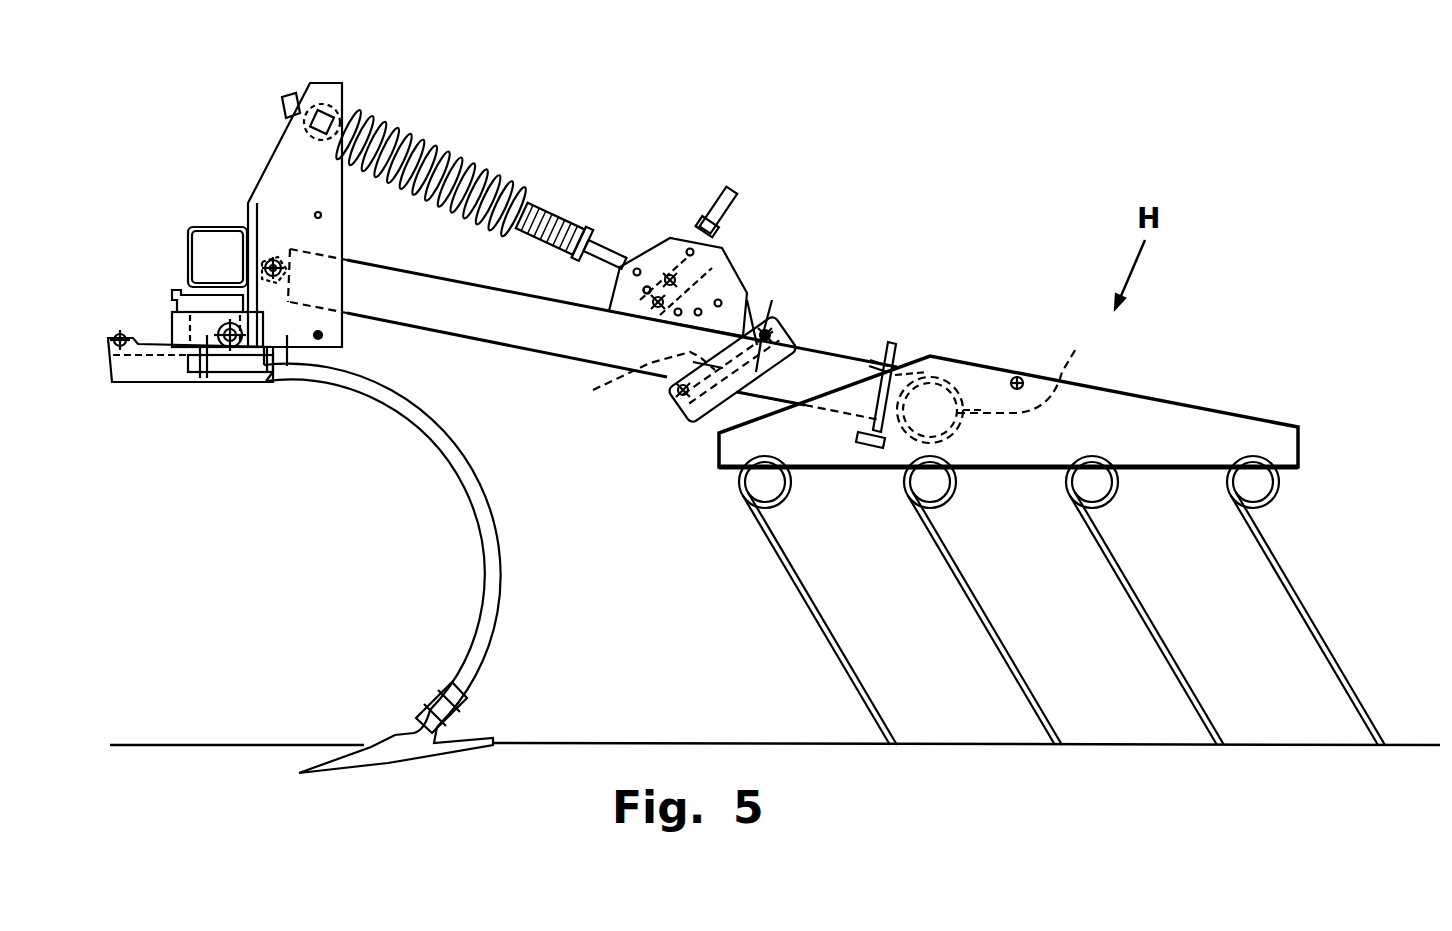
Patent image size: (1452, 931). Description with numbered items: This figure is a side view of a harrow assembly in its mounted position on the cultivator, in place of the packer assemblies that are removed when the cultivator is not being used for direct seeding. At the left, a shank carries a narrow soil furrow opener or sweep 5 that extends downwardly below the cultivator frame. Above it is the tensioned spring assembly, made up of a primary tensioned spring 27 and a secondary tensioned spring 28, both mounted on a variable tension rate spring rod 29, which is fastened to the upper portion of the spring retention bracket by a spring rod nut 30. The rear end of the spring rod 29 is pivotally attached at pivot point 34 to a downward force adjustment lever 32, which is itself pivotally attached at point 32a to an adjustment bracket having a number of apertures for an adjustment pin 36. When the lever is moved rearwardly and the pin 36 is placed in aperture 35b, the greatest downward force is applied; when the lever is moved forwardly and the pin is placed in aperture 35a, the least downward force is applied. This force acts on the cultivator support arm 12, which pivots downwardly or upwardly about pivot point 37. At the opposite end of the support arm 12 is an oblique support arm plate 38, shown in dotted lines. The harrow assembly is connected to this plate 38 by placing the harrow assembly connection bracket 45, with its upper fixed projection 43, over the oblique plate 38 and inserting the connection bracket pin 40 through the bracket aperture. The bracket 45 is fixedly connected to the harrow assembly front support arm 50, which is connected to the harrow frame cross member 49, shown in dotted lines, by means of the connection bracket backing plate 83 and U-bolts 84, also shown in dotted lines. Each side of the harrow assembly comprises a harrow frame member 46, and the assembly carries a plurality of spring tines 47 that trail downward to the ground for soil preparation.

The sweep 5 is at (476, 561).
The cultivator support arm 12 is at (397, 325).
The primary tensioned spring 27 is at (385, 128).
The secondary tensioned spring 28 is at (560, 217).
The variable tension rate spring rod 29 is at (606, 247).
The spring rod nut 30 is at (287, 95).
The downward force adjustment lever 32 is at (740, 203).
The pivot point 32a is at (700, 252).
The pivot point 34 is at (669, 275).
The aperture 35a is at (722, 300).
The aperture 35b is at (632, 275).
The adjustment pin 36 is at (645, 293).
The pivot point 37 is at (281, 262).
The oblique support arm plate 38 is at (612, 390).
The connection bracket pin 40 is at (668, 392).
The upper fixed projection 43 is at (782, 318).
The harrow assembly connection bracket 45 is at (805, 348).
The harrow frame member 46 is at (1170, 397).
The spring tines 47 is at (1133, 610).
The harrow frame cross member 49 is at (960, 360).
The harrow assembly front support arm 50 is at (737, 395).
The harrow assembly connection bracket backing plate 83 is at (895, 340).
The U-bolts 84 is at (1028, 368).